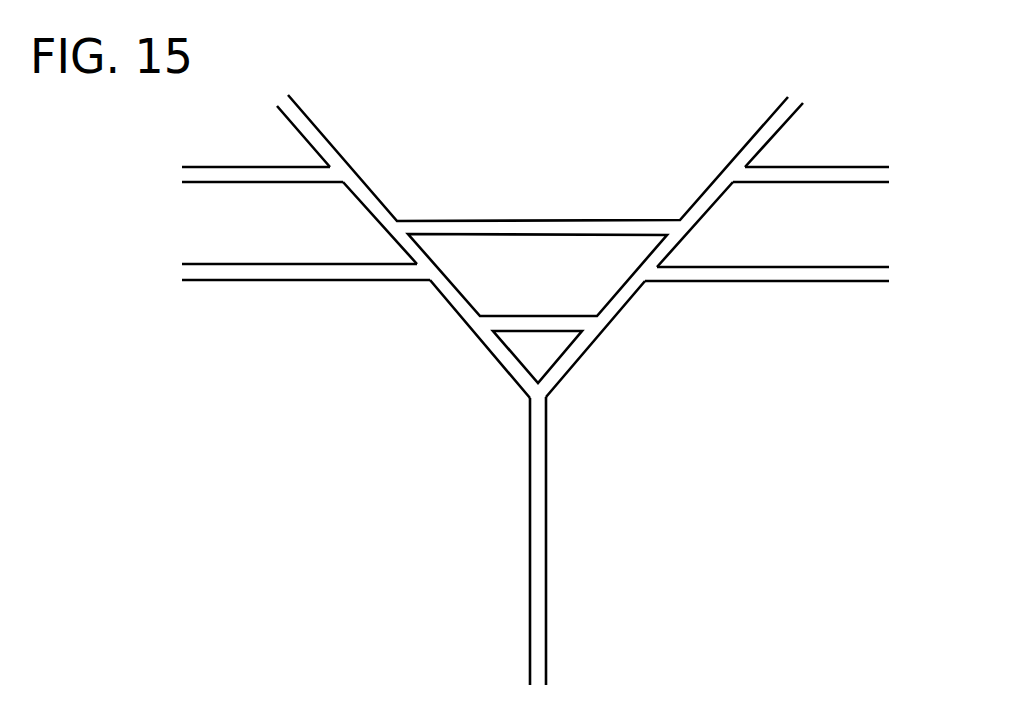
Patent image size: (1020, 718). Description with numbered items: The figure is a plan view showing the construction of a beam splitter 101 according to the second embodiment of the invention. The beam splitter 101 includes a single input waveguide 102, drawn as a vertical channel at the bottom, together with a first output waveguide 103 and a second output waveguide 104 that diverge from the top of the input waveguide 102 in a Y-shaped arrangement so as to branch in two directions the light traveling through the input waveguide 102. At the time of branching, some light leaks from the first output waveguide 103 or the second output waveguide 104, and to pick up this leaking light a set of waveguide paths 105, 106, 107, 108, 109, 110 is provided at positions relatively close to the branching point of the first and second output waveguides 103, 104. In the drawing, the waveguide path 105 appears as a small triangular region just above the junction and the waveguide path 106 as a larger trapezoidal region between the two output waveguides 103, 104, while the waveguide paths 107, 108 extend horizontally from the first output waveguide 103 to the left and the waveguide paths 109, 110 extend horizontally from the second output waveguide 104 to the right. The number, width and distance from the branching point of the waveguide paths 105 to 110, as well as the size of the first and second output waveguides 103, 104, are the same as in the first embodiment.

The beam splitter 101 is at (308, 543).
The input waveguide 102 is at (538, 538).
The first output waveguide 103 is at (318, 140).
The second output waveguide 104 is at (757, 142).
The waveguide path 105 is at (520, 320).
The waveguide path 106 is at (525, 230).
The waveguide path 107 is at (242, 272).
The waveguide path 108 is at (243, 173).
The waveguide path 109 is at (835, 277).
The waveguide path 110 is at (827, 172).